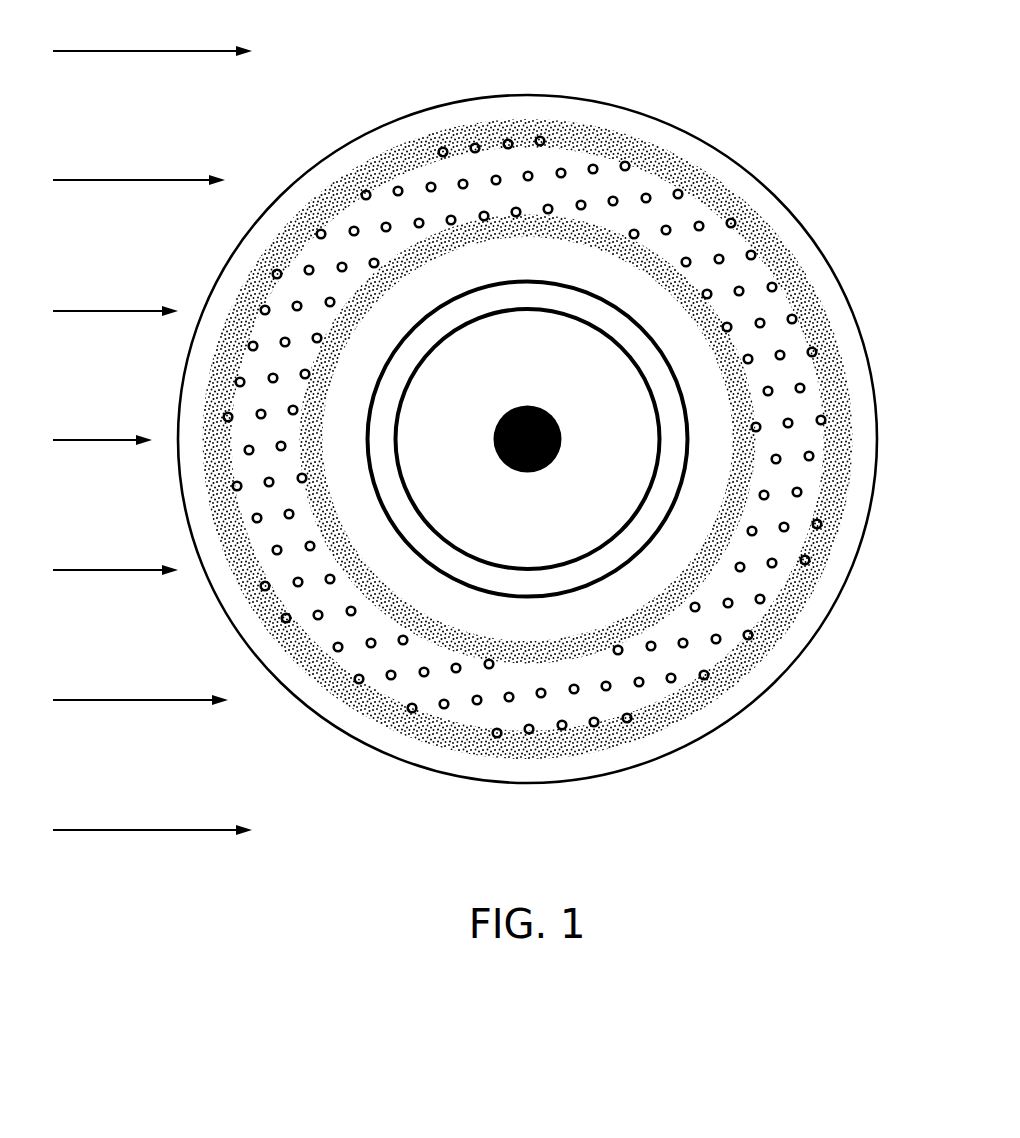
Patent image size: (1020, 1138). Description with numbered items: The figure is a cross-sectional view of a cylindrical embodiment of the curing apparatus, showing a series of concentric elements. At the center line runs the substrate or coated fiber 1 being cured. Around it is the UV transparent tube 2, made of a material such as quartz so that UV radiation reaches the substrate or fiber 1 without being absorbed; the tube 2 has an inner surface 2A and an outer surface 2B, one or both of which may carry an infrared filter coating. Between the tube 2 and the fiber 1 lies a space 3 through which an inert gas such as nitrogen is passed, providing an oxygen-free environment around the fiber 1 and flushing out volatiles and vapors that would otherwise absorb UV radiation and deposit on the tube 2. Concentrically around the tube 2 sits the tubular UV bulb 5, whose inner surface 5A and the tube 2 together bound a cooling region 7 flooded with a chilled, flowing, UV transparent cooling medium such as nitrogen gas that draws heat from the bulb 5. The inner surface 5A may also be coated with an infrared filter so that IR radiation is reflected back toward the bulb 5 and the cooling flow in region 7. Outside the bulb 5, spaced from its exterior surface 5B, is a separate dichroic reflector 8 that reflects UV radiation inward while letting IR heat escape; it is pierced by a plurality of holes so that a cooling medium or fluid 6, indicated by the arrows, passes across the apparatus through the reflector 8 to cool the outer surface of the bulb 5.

The substrate or coated fiber 1 is at (530, 406).
The UV transparent tube 2 is at (528, 432).
The surface of the tube 2A is at (442, 342).
The surface of the tube 2B is at (413, 553).
The space 3 is at (627, 410).
The tubular UV bulb 5 is at (528, 467).
The inner surface of the UV bulb 5A is at (358, 291).
The exterior surface of the bulb 5B is at (760, 665).
The cooling medium or fluid 6 is at (214, 50).
The cooling region 7 is at (452, 260).
The dichroic reflector 8 is at (658, 120).